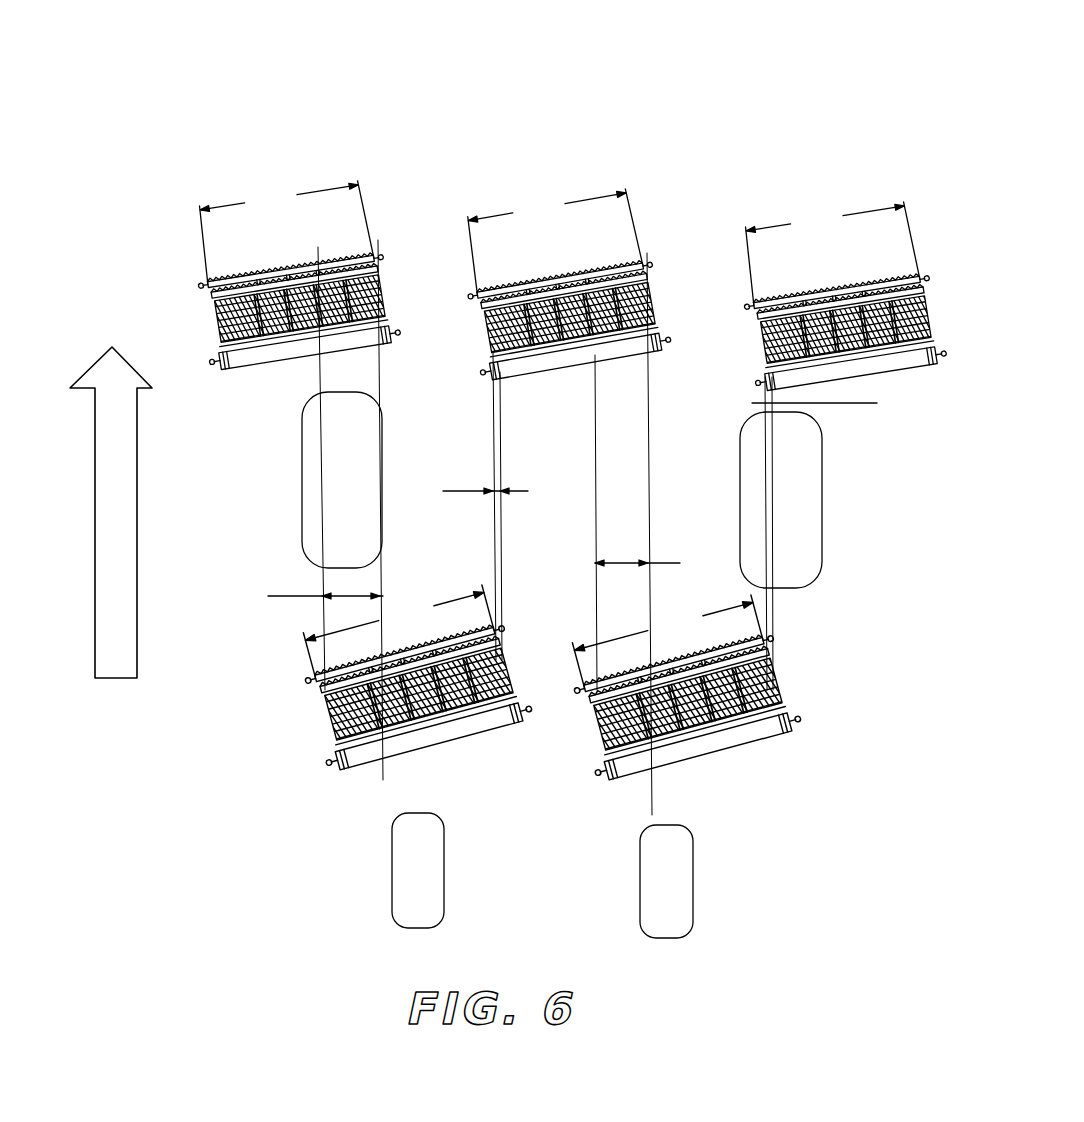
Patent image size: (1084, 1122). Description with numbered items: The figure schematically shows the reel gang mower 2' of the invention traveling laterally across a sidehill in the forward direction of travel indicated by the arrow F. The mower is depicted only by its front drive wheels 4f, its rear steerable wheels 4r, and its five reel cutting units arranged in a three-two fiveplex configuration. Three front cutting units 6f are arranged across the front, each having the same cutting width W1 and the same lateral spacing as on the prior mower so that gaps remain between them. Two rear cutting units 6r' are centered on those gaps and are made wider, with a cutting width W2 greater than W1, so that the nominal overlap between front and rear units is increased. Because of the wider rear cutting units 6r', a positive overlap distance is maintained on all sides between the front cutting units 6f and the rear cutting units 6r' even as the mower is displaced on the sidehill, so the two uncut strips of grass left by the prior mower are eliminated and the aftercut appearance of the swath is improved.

The reel gang mower 2' is at (492, 69).
The front cutting units 6f is at (276, 171).
The rear cutting units 6r' is at (541, 701).
The front drive wheels 4f is at (302, 521).
The rear steerable wheels 4r is at (392, 875).
The forward direction of travel F is at (137, 503).
The cutting width of front cutting units W1 is at (558, 242).
The cutting width of rear cutting units W2 is at (532, 636).